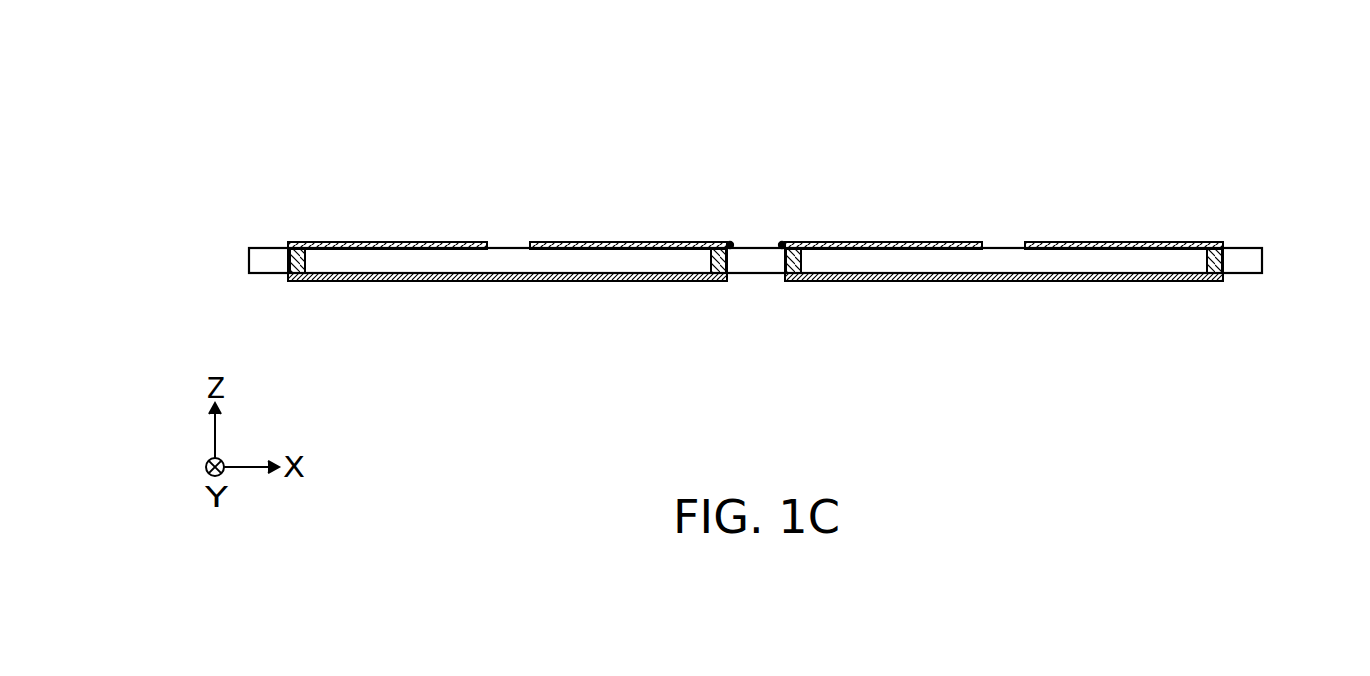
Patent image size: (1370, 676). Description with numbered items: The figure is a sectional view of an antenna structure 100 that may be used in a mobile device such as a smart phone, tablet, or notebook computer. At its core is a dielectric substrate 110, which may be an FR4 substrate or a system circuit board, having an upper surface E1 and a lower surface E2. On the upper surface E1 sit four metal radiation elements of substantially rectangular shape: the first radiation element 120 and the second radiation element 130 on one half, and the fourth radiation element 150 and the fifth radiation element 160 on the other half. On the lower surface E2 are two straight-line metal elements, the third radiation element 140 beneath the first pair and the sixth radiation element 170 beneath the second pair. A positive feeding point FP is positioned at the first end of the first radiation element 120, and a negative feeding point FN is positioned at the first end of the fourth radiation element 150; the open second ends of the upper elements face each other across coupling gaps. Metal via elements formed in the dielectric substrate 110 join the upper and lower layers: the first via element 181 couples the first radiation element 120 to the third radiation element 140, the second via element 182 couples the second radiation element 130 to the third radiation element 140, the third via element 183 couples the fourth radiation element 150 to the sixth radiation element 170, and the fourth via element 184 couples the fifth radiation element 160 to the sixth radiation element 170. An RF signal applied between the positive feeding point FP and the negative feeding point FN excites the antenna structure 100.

The antenna structure 100 is at (216, 72).
The dielectric substrate 110 is at (1262, 260).
The first radiation element 120 is at (618, 242).
The second radiation element 130 is at (389, 242).
The third radiation element 140 is at (507, 281).
The fourth radiation element 150 is at (875, 242).
The fifth radiation element 160 is at (1131, 242).
The sixth radiation element 170 is at (1002, 281).
The first via element 181 is at (718, 281).
The second via element 182 is at (298, 281).
The third via element 183 is at (793, 281).
The fourth via element 184 is at (1214, 281).
The positive feeding point FP is at (730, 242).
The negative feeding point FN is at (782, 242).
The upper surface E1 is at (1246, 248).
The lower surface E2 is at (1246, 273).